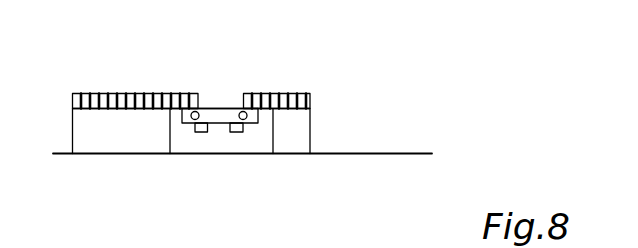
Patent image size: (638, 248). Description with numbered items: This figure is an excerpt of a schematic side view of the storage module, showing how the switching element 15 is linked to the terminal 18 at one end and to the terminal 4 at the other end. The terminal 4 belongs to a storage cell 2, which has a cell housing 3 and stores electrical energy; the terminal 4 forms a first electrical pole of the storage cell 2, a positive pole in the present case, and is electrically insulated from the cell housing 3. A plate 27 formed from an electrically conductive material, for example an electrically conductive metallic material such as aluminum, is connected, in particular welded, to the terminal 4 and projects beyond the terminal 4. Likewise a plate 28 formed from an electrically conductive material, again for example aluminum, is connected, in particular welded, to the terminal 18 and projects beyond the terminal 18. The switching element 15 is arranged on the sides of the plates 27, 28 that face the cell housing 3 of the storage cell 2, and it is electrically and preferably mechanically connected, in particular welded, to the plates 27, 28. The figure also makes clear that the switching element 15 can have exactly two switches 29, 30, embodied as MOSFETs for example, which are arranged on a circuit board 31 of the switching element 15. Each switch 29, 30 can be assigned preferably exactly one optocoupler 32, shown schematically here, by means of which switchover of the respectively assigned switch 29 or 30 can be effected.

The storage cell 2 is at (426, 163).
The cell housing 3 is at (407, 152).
The terminal 4 is at (100, 137).
The switching element 15 is at (224, 107).
The terminal 18 is at (300, 140).
The plate 27 is at (99, 90).
The plate 28 is at (305, 93).
The switch 29 is at (200, 133).
The switch 30 is at (237, 133).
The circuit board 31 is at (206, 109).
The optocoupler 32 is at (195, 120).